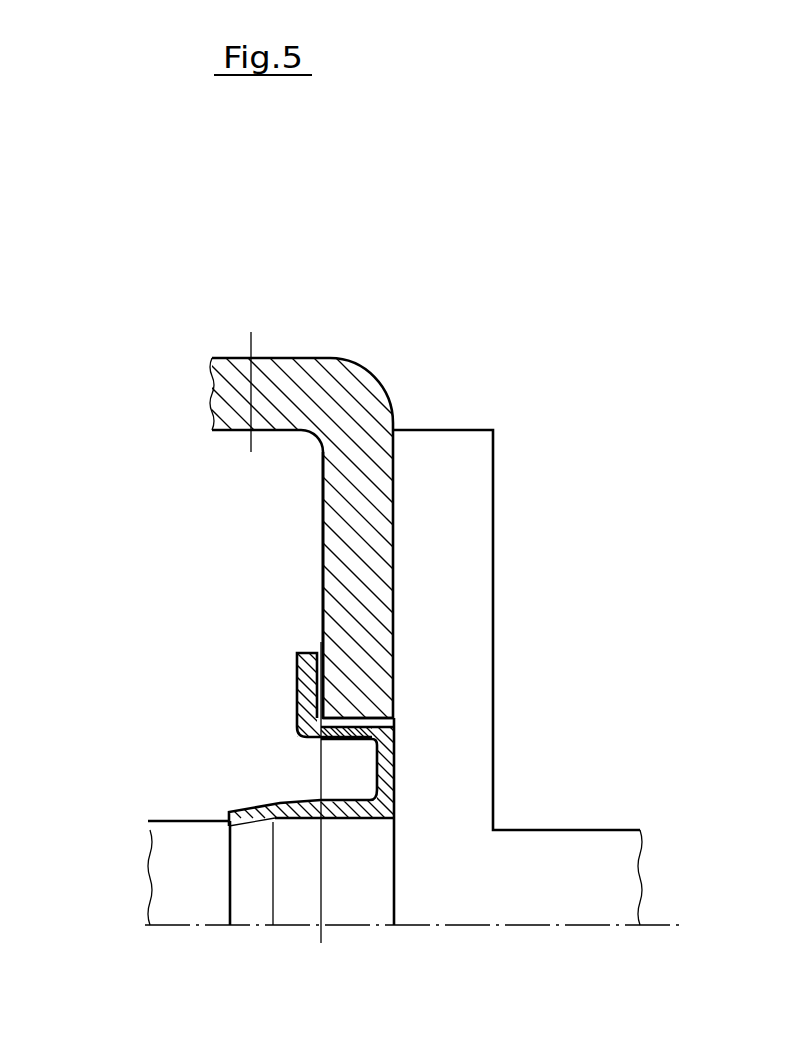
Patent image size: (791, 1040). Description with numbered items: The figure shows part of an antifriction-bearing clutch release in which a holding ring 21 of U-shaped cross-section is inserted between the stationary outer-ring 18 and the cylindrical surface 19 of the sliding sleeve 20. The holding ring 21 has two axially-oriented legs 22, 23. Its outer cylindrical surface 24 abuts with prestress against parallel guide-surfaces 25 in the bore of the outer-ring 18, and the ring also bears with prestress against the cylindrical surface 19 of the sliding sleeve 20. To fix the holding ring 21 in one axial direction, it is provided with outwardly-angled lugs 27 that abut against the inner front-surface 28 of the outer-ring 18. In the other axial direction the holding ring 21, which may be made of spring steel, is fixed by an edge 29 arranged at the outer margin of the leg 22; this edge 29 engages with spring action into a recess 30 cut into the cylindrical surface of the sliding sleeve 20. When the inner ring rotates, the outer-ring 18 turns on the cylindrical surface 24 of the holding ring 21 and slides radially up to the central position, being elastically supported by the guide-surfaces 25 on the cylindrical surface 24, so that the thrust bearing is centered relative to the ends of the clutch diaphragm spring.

The outer-ring 18 is at (360, 526).
The cylindrical surface 19 is at (196, 816).
The sliding sleeve 20 is at (222, 887).
The holding ring 21 is at (517, 677).
The leg 22 is at (317, 820).
The leg 23 is at (471, 726).
The outer cylindrical surface 24 is at (352, 712).
The guide-surfaces 25 is at (471, 624).
The outwardly-angled lugs 27 is at (305, 678).
The inner front-surface 28 is at (320, 551).
The edge 29 is at (160, 822).
The recess 30 is at (253, 870).